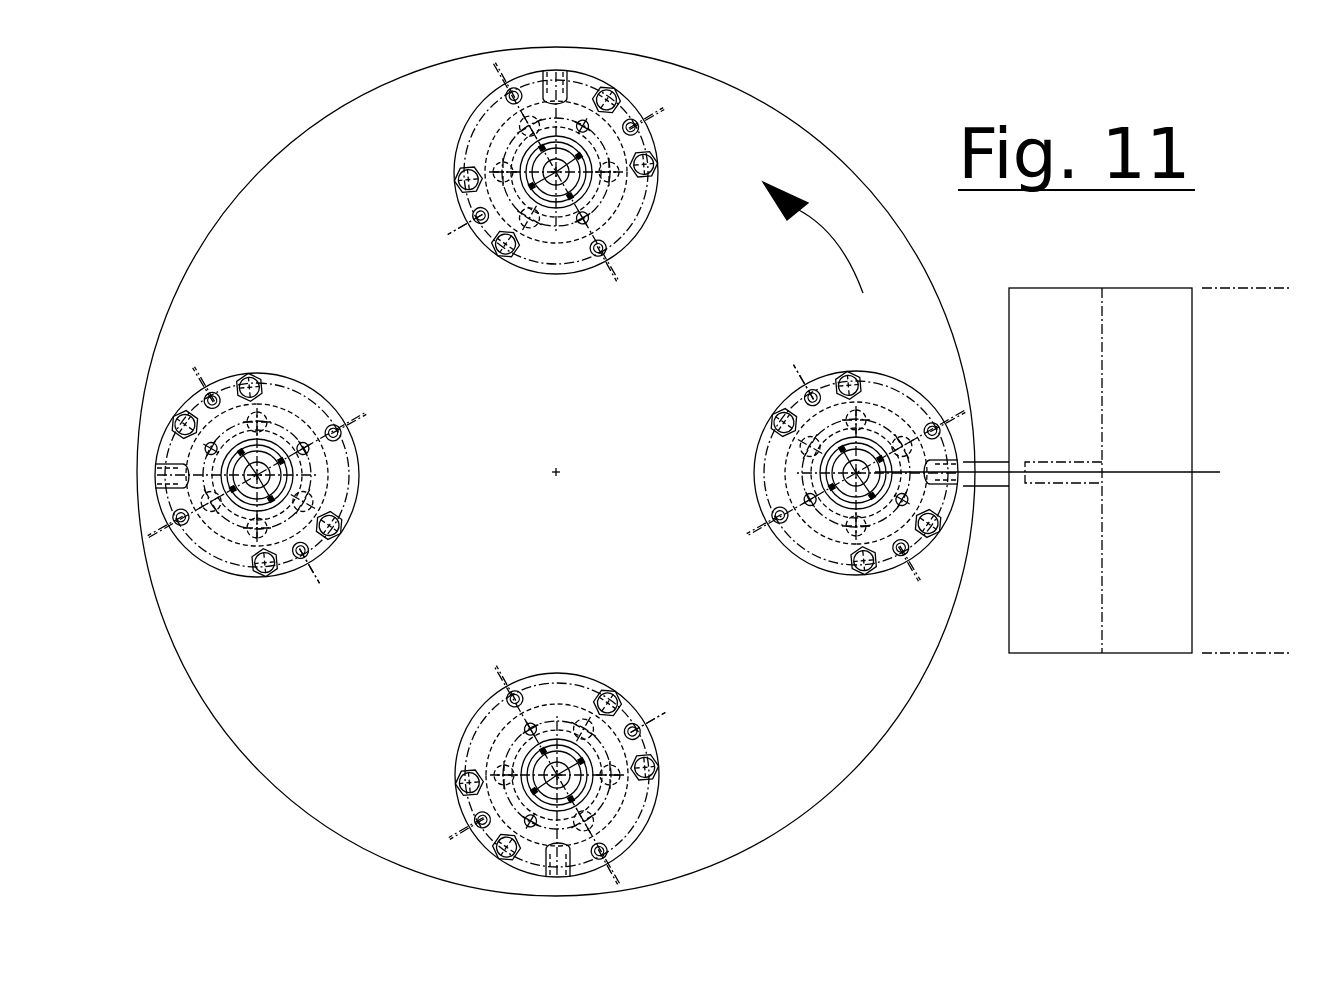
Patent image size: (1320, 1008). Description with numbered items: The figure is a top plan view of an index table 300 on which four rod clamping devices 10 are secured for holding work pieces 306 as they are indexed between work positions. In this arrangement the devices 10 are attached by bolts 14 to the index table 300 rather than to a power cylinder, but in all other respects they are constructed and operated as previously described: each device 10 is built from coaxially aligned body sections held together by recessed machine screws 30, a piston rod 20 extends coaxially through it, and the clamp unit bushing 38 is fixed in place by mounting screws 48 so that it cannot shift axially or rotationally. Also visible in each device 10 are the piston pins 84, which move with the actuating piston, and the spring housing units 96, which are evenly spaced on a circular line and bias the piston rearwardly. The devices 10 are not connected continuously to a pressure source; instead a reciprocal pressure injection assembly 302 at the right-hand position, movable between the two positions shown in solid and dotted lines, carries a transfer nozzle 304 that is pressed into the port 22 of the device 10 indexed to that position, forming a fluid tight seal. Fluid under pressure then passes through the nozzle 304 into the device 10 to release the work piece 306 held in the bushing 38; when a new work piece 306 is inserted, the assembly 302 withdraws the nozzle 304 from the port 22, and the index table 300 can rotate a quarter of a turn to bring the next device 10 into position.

The rod clamping device 10 is at (378, 156).
The bolts 14 is at (650, 163).
The piston rod 20 is at (565, 165).
The port 22 is at (560, 78).
The recessed machine screws 30 is at (636, 128).
The bushing 38 is at (557, 190).
The mounting screws 48 is at (572, 199).
The piston members 84 is at (588, 218).
The housing units 96 is at (615, 182).
The index table 300 is at (464, 437).
The reciprocal pressure injection assembly 302 is at (1026, 364).
The transfer nozzle 304 is at (988, 462).
The work pieces 306 is at (264, 486).